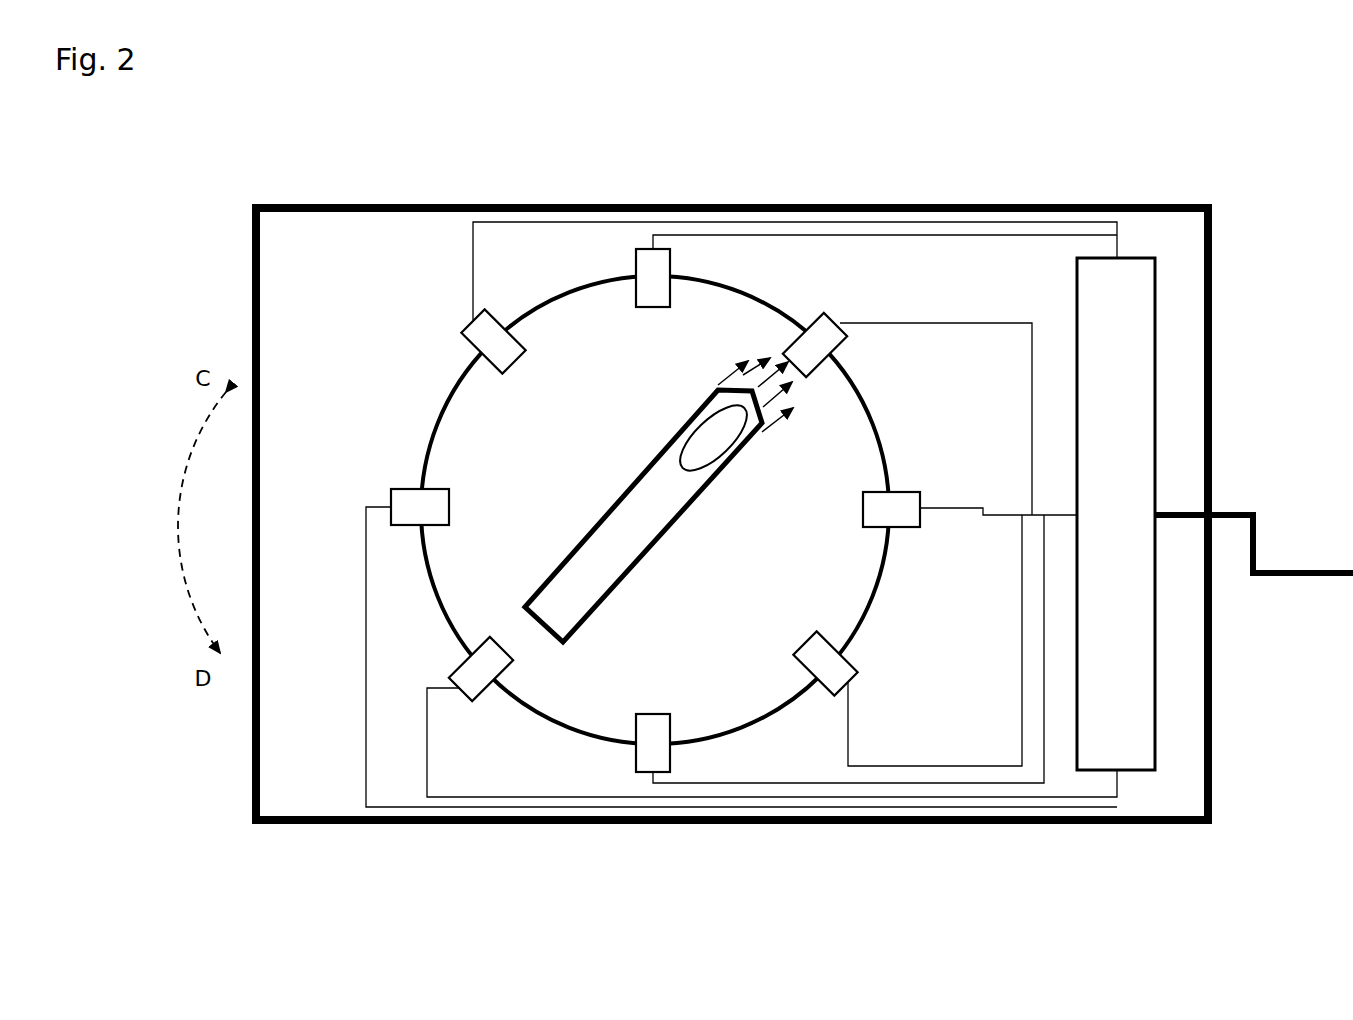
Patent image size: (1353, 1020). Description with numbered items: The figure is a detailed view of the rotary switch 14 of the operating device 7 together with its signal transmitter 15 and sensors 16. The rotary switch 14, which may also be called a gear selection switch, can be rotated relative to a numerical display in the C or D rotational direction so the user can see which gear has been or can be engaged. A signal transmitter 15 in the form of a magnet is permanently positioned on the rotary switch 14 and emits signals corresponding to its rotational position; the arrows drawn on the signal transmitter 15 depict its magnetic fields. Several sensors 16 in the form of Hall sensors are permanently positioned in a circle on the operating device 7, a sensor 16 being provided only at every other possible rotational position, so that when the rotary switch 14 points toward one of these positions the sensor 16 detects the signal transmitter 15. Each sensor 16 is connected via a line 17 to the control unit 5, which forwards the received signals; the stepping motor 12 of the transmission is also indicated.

The control unit 5 is at (1128, 737).
The operating device 7 is at (302, 773).
The stepping motor 12 is at (699, 673).
The rotary switch 14 is at (597, 578).
The signal transmitter 15 is at (713, 433).
The sensor 16 is at (815, 340).
The line 17 is at (868, 322).